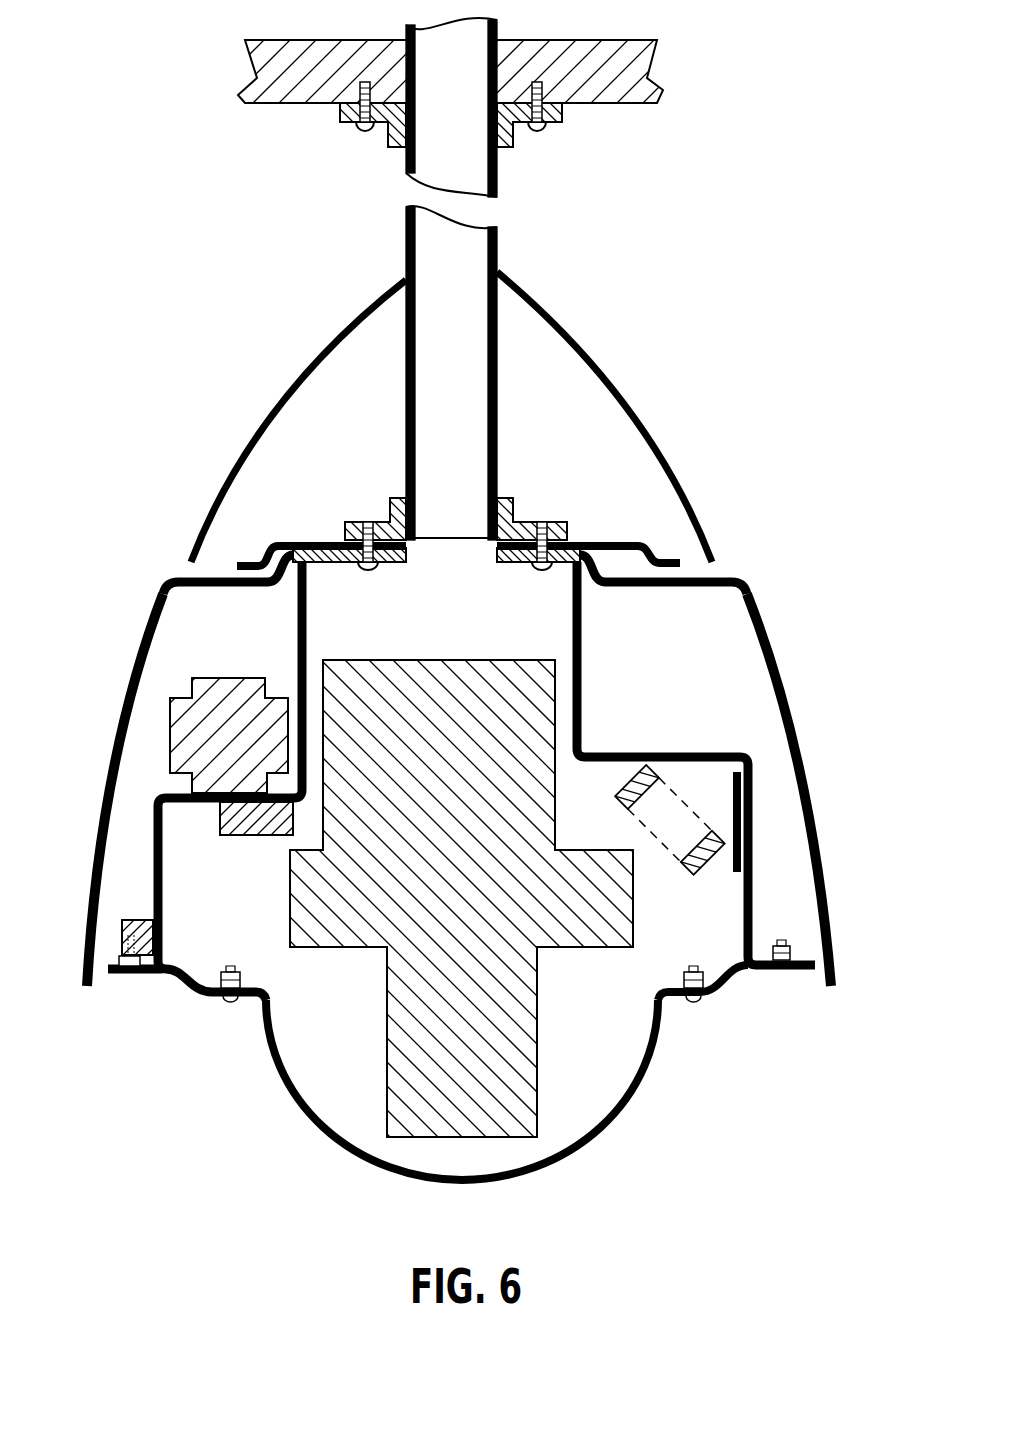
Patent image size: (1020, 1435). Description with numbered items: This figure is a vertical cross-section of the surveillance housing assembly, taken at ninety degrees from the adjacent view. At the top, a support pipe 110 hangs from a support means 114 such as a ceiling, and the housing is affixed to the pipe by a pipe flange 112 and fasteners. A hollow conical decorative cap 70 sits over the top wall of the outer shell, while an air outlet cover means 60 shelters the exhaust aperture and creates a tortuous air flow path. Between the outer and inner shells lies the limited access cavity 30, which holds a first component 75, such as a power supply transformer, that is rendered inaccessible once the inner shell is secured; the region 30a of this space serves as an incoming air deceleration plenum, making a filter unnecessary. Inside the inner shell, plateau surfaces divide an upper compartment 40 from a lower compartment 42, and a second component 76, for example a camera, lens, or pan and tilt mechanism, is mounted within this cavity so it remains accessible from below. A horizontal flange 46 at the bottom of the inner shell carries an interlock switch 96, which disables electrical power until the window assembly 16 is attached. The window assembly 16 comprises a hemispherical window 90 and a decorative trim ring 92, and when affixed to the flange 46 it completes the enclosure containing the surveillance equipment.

The support means 114 is at (638, 47).
The support pipe 110 is at (500, 244).
The decorative cap 70 is at (596, 362).
The pipe flange 112 is at (563, 522).
The air outlet cover means 60 is at (673, 562).
The limited access cavity 30 is at (235, 645).
The incoming air deceleration plenum region 30a is at (790, 862).
The upper compartment 40 is at (447, 640).
The lower compartment 42 is at (240, 923).
The first component 75 is at (183, 713).
The interlock switch 96 is at (130, 920).
The flange 46 is at (125, 977).
The decorative trim ring 92 is at (738, 978).
The hemispherical window 90 is at (340, 1140).
The window assembly 16 is at (457, 755).
The second component 76 is at (512, 1115).